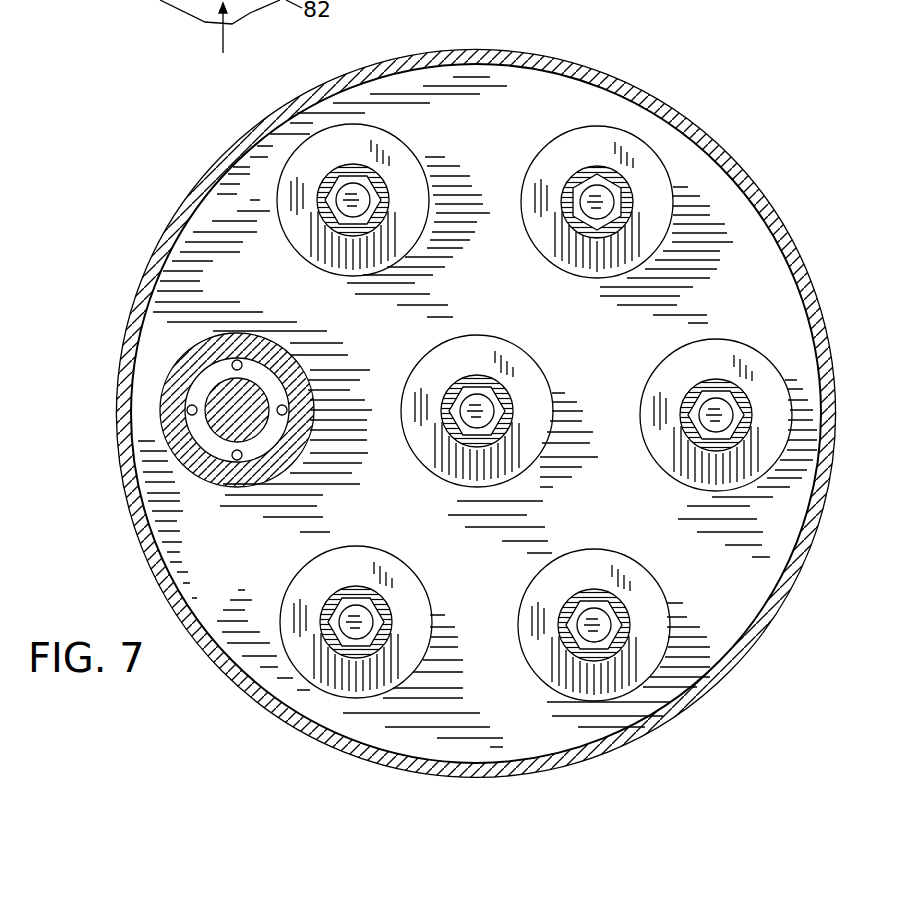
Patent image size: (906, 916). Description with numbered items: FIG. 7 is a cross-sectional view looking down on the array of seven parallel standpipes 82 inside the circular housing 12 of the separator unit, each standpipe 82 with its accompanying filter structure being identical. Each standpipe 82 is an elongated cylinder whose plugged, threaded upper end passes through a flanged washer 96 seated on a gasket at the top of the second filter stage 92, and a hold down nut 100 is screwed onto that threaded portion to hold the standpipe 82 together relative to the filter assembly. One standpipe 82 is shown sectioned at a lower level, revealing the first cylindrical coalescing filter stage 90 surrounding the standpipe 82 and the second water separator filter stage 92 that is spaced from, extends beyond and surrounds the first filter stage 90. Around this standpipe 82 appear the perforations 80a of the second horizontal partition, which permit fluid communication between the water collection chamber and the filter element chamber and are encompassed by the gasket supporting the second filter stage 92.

The housing wall 12 is at (619, 81).
The hold down nut 100 is at (600, 186).
The standpipe 82 is at (614, 196).
The flanged washer 96 is at (556, 216).
The perforations 80a is at (243, 361).
The first filter stage 90 is at (260, 397).
The second filter stage 92 is at (303, 403).